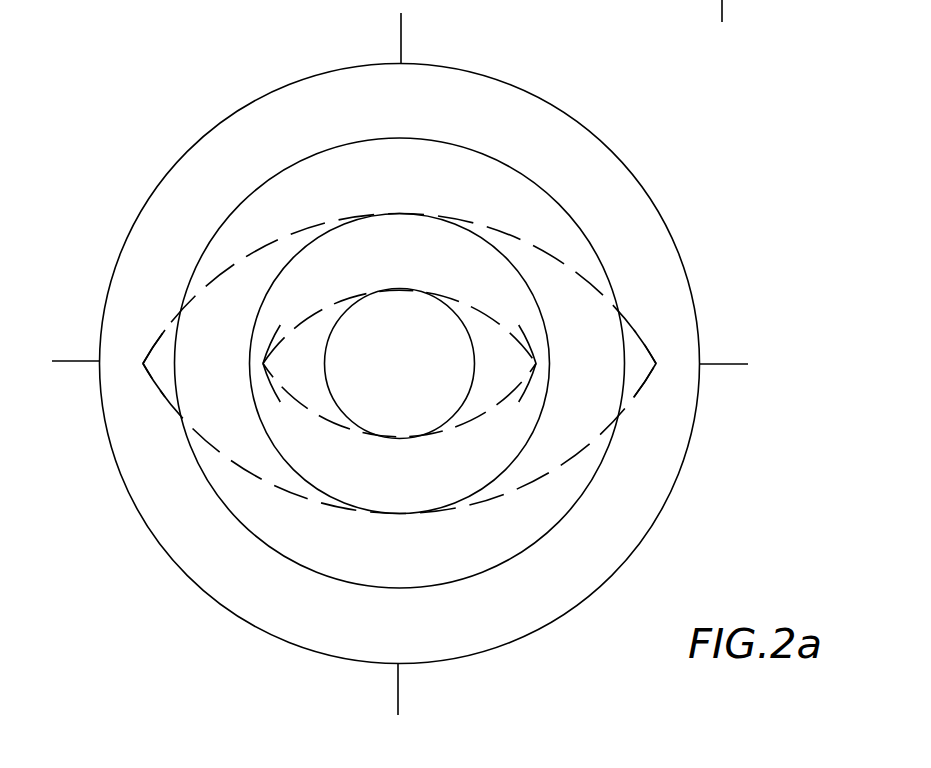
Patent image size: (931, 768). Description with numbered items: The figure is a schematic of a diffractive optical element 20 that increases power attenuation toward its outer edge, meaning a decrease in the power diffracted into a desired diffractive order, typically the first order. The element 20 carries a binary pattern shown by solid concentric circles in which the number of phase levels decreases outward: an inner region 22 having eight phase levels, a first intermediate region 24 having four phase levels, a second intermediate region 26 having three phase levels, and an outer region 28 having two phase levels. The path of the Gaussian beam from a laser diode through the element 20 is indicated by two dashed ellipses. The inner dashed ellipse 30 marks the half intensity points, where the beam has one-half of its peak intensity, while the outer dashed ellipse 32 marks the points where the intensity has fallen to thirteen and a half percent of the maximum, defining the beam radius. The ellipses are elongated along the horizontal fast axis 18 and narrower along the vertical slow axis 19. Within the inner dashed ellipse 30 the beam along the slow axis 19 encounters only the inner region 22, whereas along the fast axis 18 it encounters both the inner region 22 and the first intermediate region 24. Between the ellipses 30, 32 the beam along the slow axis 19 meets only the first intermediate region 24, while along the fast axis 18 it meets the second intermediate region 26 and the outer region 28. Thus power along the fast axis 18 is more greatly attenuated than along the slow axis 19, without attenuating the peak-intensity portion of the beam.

The fast axis 18 is at (733, 364).
The slow axis 19 is at (399, 696).
The optical element 20 is at (703, 263).
The inner region 22 is at (444, 402).
The first intermediate region 24 is at (490, 471).
The second intermediate region 26 is at (538, 535).
The outer region 28 is at (582, 591).
The inner dashed ellipse 30 is at (326, 304).
The outer dashed ellipse 32 is at (308, 229).